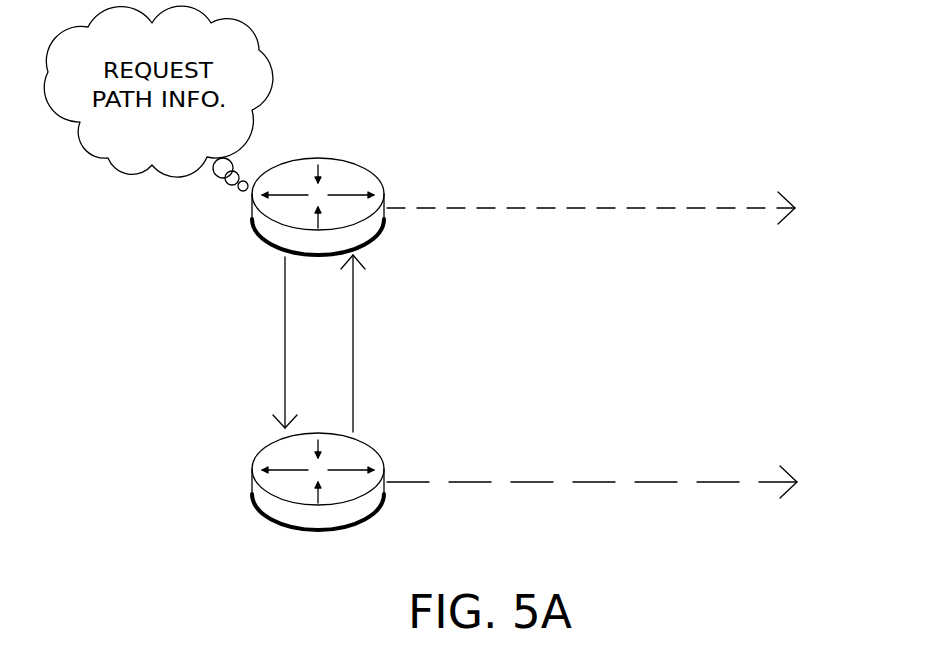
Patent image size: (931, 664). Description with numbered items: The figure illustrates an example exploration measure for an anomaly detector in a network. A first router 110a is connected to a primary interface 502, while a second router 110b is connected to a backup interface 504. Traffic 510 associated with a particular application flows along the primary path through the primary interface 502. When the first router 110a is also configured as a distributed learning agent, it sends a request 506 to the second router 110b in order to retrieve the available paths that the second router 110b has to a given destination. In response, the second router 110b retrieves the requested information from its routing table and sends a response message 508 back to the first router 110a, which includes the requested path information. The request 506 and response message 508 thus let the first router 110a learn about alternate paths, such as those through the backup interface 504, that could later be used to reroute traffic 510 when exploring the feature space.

The first router 110a is at (381, 174).
The second router 110b is at (381, 449).
The primary interface 502 is at (572, 251).
The backup interface 504 is at (592, 508).
The path information request message 506 is at (272, 305).
The response message 508 is at (432, 334).
The traffic 510 is at (602, 147).